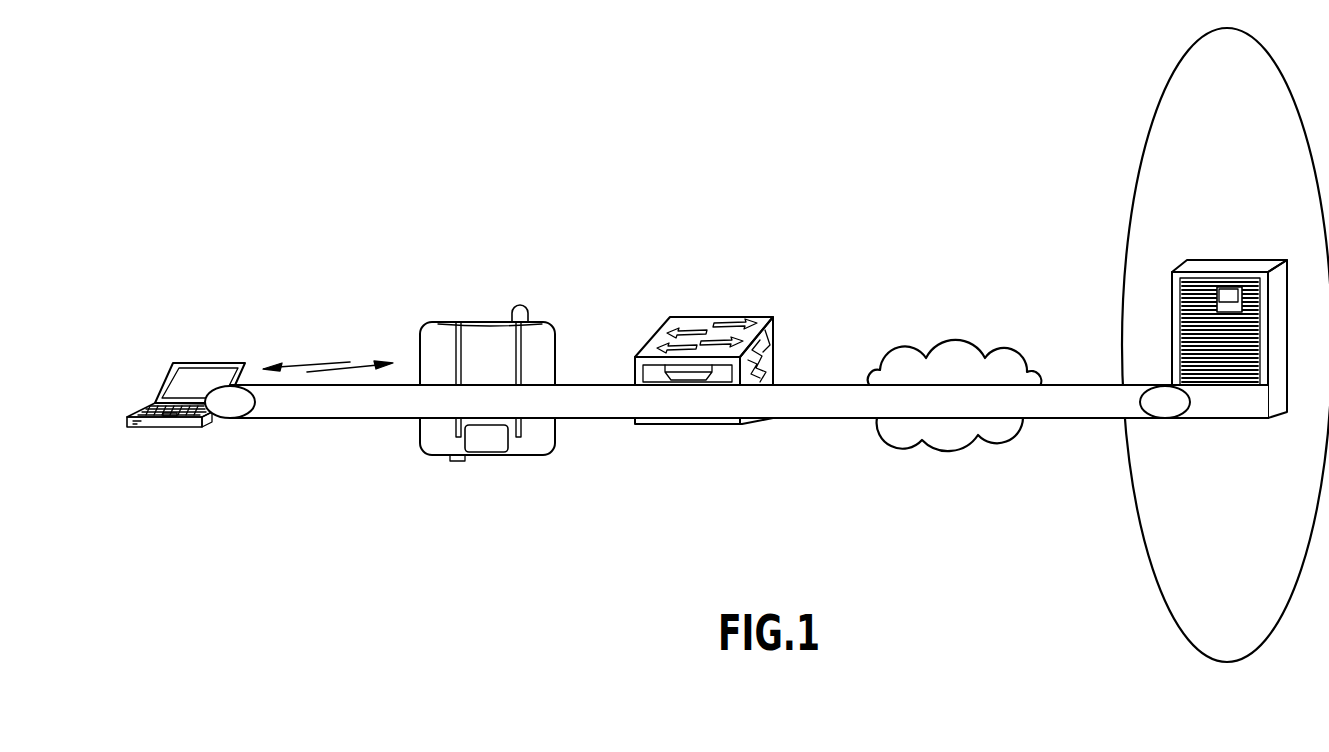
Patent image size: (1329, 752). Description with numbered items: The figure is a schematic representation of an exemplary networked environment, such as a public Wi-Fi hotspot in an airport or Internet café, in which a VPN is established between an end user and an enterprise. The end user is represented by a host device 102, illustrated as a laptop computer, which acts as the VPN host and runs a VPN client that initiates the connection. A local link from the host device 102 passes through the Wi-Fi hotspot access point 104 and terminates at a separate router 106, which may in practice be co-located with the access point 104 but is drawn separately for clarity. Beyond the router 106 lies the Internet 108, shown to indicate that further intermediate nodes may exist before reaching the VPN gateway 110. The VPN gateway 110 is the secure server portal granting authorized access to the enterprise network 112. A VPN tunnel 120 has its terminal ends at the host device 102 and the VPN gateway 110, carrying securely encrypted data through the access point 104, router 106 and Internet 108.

The host device 102 is at (200, 363).
The Wi-Fi hotspot access point 104 is at (472, 322).
The router 106 is at (775, 345).
The Internet 108 is at (960, 340).
The VPN gateway 110 is at (1248, 257).
The enterprise network 112 is at (1177, 107).
The VPN tunnel 120 is at (585, 392).